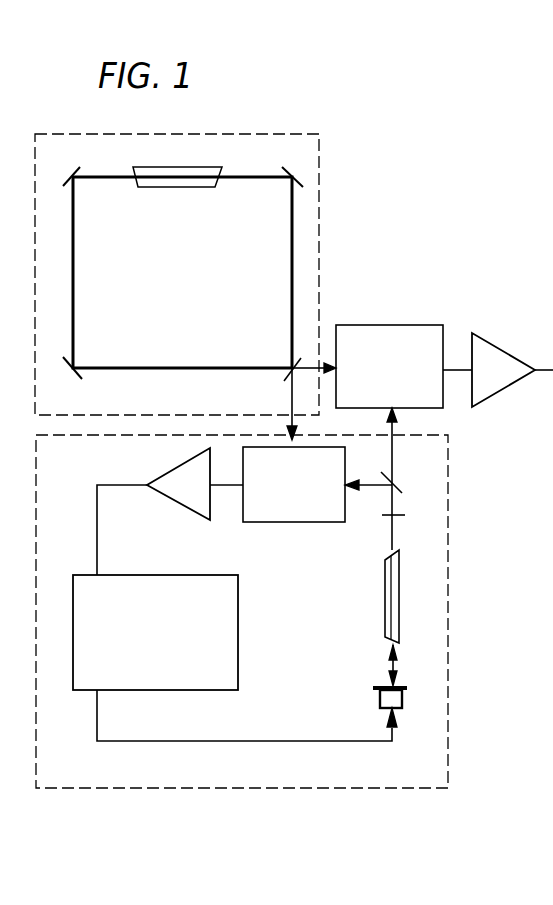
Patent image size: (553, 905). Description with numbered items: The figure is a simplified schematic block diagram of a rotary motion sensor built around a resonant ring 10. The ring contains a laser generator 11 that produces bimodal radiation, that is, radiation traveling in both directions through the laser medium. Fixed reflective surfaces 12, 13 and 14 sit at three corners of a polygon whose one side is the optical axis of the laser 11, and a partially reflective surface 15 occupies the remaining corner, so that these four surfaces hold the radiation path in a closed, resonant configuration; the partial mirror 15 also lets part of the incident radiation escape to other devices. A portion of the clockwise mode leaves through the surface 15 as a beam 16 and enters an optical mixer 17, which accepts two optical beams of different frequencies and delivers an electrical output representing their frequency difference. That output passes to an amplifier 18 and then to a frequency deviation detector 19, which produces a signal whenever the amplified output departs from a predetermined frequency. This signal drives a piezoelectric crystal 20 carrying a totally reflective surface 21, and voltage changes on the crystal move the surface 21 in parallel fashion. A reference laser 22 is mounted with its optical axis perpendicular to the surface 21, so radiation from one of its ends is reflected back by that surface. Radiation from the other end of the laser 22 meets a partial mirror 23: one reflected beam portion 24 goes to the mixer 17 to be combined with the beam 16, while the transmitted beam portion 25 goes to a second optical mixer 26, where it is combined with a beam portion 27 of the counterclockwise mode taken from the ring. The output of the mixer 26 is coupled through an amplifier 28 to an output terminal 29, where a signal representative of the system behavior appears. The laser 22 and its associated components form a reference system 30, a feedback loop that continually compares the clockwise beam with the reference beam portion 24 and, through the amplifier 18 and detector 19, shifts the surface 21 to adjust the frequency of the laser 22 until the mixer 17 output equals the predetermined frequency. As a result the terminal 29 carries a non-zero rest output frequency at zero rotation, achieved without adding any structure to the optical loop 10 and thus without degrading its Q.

The resonant ring 10 is at (319, 256).
The laser generator 11 is at (207, 170).
The fixed reflective surface 12 is at (303, 187).
The fixed reflective surface 13 is at (63, 178).
The fixed reflective surface 14 is at (82, 380).
The partially reflective surface 15 is at (300, 360).
The beam 16 is at (292, 397).
The optical mixer 17 is at (291, 523).
The amplifier 18 is at (167, 480).
The frequency deviation detector 19 is at (228, 612).
The piezoelectric crystal 20 is at (397, 700).
The totally reflective surface 21 is at (380, 686).
The laser 22 is at (396, 600).
The partial mirror 23 is at (402, 492).
The beam portion 24 is at (384, 490).
The beam portion 25 is at (394, 458).
The optical mixer 26 is at (413, 330).
The beam portion 27 is at (298, 360).
The amplifier 28 is at (493, 357).
The output terminal 29 is at (552, 376).
The reference system 30 is at (258, 790).